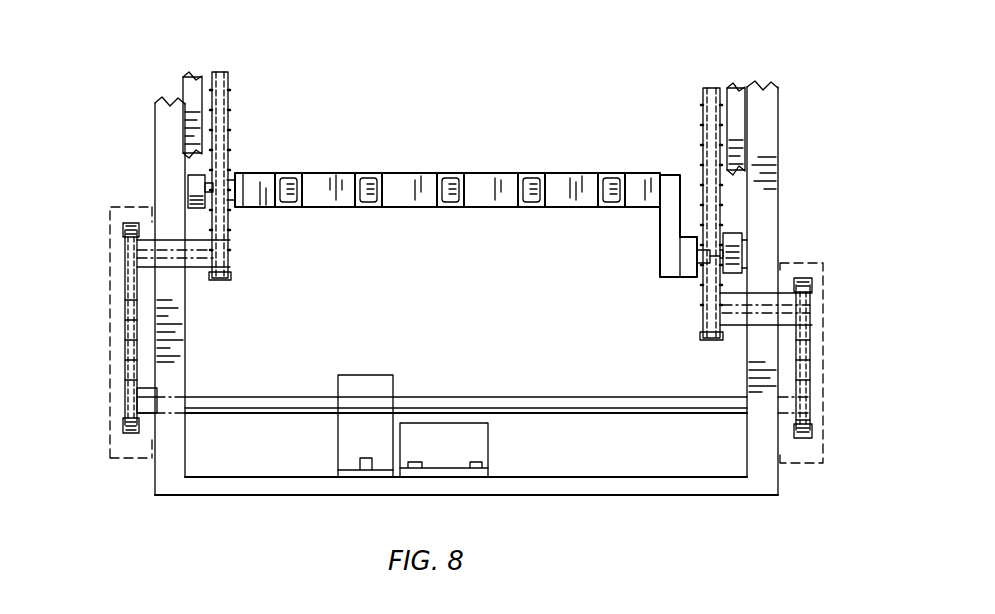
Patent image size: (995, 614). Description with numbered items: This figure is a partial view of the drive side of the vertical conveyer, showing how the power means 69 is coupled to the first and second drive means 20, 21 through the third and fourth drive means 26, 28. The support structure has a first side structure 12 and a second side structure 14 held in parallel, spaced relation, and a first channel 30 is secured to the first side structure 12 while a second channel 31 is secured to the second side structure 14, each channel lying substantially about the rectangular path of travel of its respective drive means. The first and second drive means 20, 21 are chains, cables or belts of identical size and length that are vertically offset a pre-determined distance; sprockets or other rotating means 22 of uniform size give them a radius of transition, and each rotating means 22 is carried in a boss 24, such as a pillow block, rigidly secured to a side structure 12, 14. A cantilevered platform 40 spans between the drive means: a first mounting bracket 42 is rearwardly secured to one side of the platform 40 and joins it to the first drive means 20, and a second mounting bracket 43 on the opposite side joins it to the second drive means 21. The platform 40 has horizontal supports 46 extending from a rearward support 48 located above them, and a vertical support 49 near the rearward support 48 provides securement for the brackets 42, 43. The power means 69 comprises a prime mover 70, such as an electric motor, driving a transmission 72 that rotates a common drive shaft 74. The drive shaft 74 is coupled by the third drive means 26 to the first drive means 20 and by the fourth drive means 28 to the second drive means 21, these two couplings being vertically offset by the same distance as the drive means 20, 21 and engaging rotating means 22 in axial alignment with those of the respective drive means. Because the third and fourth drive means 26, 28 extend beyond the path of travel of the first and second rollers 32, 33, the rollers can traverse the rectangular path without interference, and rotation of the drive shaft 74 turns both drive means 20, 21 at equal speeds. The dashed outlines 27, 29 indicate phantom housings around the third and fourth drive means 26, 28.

The first side structure 12 is at (165, 200).
The second side structure 14 is at (777, 242).
The first drive means 20 is at (229, 122).
The second drive means 21 is at (720, 228).
The rotating means 22 is at (126, 244).
The boss 24 is at (130, 240).
The third drive means 26 is at (126, 362).
The rod housing (phantom) 27 is at (108, 255).
The fourth drive means 28 is at (811, 353).
The rod housing (phantom) 29 is at (815, 465).
The first channel 30 is at (191, 84).
The second channel 31 is at (738, 130).
The first roller 32 is at (190, 181).
The second roller 33 is at (740, 255).
The cantilevered platform 40 is at (362, 103).
The first mounting bracket 42 is at (240, 175).
The second mounting bracket 43 is at (680, 257).
The horizontal supports 46 is at (368, 208).
The rearward support 48 is at (402, 175).
The vertical support 49 is at (670, 177).
The power means 69 is at (427, 358).
The prime mover 70 is at (488, 440).
The transmission 72 is at (365, 375).
The drive shaft 74 is at (620, 372).